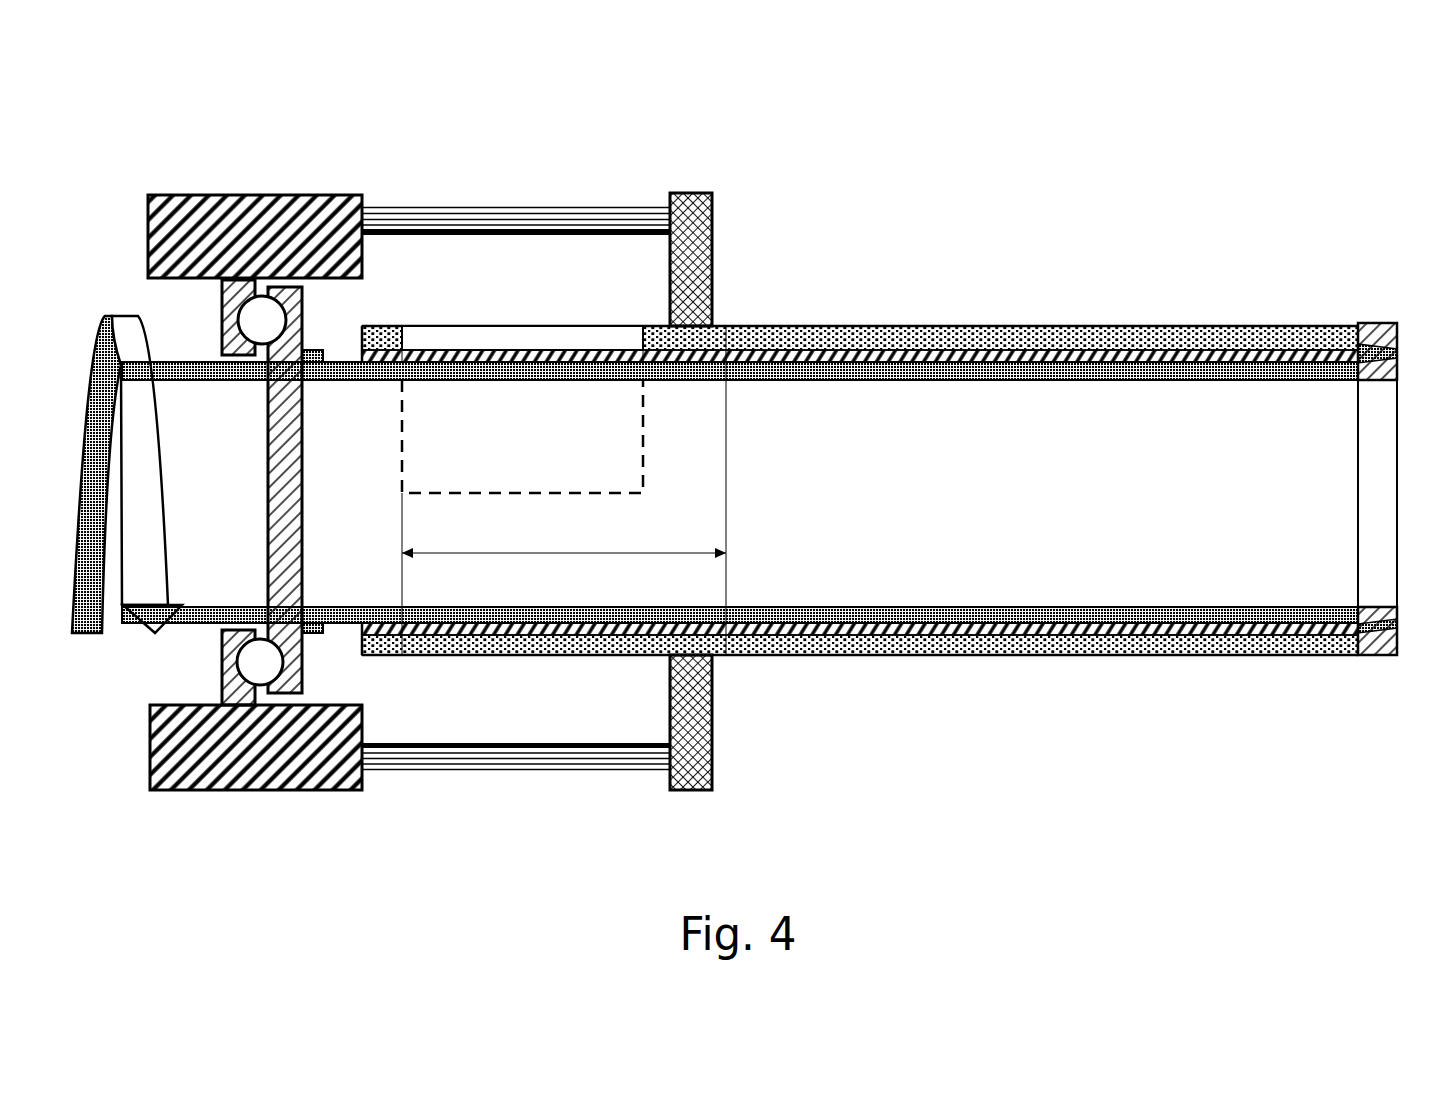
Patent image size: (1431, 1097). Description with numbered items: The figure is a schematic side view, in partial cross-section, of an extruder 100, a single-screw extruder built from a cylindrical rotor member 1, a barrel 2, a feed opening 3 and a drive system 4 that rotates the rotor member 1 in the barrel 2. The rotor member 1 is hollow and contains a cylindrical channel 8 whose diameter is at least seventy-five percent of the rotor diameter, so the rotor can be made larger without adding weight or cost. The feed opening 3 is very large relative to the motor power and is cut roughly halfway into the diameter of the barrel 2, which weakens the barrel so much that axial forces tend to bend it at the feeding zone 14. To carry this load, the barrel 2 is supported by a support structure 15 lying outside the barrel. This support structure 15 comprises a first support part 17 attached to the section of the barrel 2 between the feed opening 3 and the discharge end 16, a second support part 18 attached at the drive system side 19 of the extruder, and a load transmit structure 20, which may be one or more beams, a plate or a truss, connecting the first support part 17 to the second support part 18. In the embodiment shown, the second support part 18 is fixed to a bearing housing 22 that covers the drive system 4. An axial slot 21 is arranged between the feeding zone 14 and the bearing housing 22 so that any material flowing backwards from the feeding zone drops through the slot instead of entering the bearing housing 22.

The rotor member 1 is at (870, 617).
The barrel 2 is at (790, 650).
The feed opening 3 is at (573, 427).
The drive system 4 is at (221, 140).
The cylindrical channel 8 is at (795, 514).
The feeding zone 14 is at (564, 538).
The support structure 15 is at (607, 430).
The discharge end 16 is at (1348, 282).
The first support part 17 is at (693, 243).
The second support part 18 is at (305, 232).
The drive system side 19 is at (280, 419).
The load transmit structure 20 is at (468, 218).
The axial slot 21 is at (335, 352).
The bearing housing 22 is at (370, 697).
The extruder 100 is at (1131, 750).